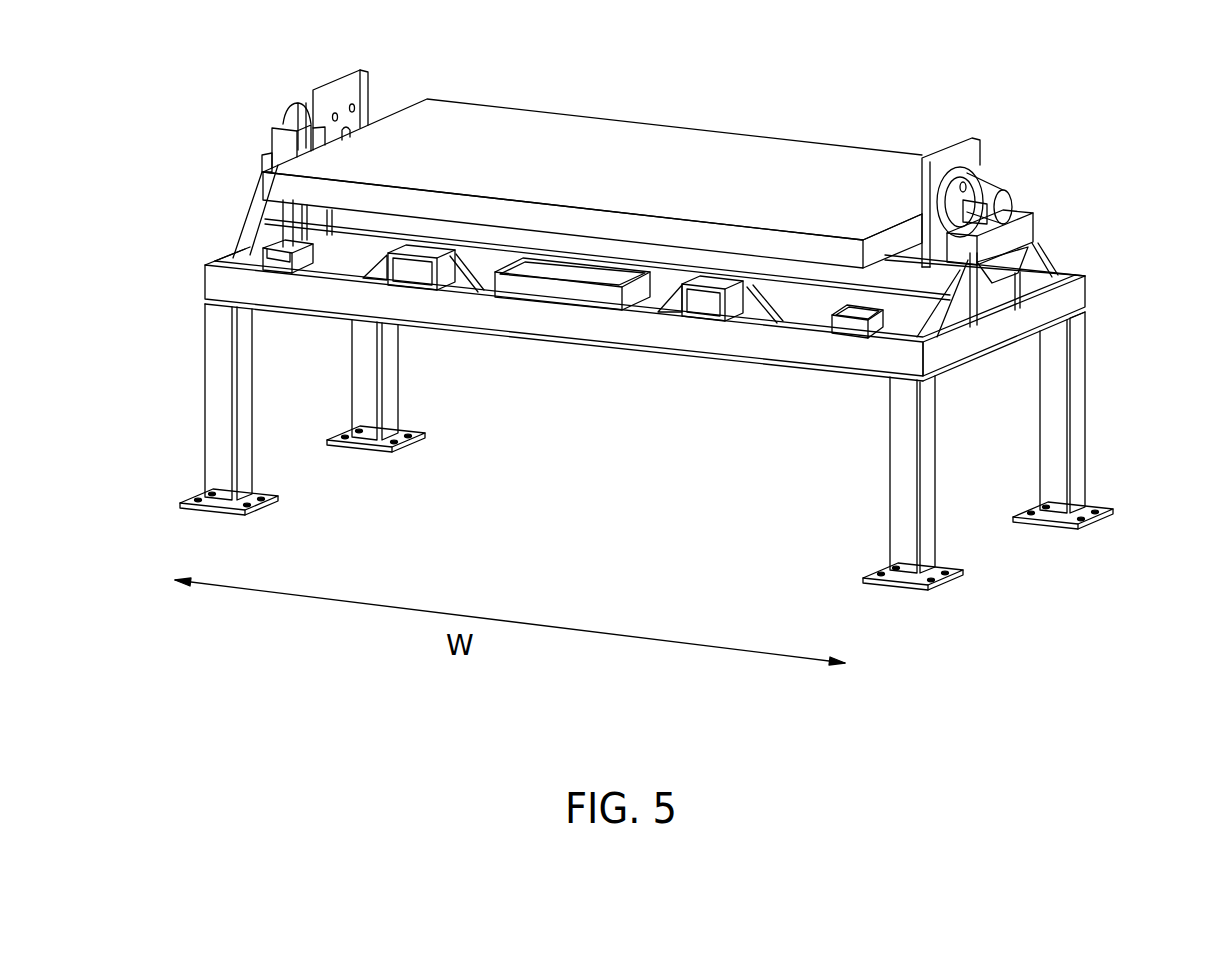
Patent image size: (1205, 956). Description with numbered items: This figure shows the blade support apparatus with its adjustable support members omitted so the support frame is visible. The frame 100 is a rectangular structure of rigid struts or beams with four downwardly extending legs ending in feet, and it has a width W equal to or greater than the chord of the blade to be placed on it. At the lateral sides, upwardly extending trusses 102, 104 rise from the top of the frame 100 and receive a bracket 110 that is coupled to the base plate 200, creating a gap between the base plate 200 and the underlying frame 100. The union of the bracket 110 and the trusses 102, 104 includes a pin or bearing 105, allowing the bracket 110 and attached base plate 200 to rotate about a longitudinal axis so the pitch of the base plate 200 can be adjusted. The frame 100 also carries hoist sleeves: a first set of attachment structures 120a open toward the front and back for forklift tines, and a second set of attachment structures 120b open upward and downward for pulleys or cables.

The frame 100 is at (177, 332).
The base plate 200 is at (592, 183).
The truss 102 is at (272, 118).
The bracket 110 is at (363, 100).
The pin or bearing 105 is at (1018, 197).
The truss 104 is at (1057, 233).
The first set of attachment structures 120a is at (455, 295).
The second set of attachment structures 120b is at (597, 295).